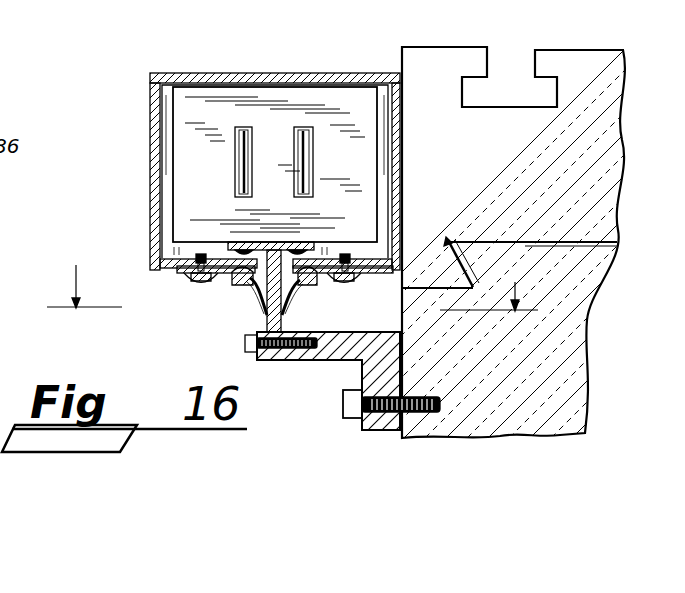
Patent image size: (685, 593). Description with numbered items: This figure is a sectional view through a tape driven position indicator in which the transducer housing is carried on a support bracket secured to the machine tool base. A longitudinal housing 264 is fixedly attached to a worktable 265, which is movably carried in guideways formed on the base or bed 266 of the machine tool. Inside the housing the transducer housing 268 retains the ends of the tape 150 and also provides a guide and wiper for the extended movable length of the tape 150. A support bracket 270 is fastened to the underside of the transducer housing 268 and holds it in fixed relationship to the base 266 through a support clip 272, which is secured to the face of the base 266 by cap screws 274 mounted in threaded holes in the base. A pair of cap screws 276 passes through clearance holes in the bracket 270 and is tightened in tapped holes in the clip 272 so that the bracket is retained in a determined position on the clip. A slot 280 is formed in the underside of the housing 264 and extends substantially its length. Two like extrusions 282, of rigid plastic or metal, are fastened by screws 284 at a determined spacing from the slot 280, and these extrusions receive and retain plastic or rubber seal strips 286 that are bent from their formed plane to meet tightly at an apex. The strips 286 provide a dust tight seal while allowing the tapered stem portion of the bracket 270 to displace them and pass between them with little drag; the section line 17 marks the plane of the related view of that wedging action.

The section line 17- 17 is at (292, 275).
The tape 150 is at (243, 147).
The longitudinal housing 264 is at (251, 50).
The worktable 265 is at (563, 57).
The base or bed 266 is at (584, 348).
The transducer housing 268 is at (180, 98).
The support bracket 270 is at (265, 285).
The support clip 272 is at (392, 366).
The cap screws 274 is at (344, 413).
The cap screws 276 is at (246, 354).
The slot 280 is at (240, 277).
The extrusions 282 is at (192, 271).
The screws 284 is at (200, 257).
The seal strips 286 is at (262, 300).